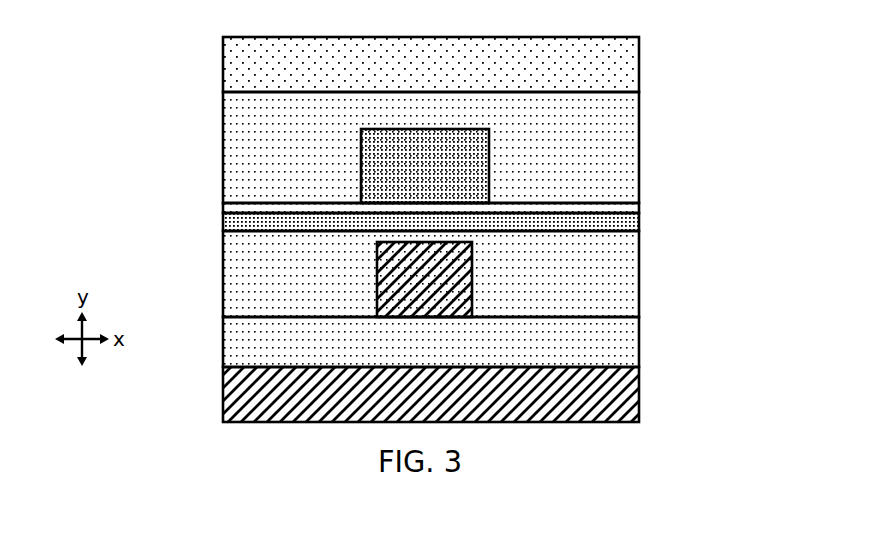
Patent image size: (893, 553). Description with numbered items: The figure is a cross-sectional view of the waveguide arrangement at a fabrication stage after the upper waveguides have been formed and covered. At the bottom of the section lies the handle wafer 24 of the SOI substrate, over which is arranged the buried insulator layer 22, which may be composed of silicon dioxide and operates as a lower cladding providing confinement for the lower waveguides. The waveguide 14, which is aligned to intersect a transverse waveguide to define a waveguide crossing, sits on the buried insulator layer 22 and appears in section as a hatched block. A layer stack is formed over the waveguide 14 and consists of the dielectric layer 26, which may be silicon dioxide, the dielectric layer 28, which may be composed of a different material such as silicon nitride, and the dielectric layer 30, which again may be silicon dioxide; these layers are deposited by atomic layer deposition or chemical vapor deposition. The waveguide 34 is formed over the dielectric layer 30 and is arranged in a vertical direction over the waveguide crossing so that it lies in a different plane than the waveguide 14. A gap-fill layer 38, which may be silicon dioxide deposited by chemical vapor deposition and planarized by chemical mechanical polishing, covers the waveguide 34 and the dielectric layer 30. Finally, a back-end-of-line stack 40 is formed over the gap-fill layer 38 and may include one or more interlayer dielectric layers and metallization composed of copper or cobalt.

The waveguide 14 is at (419, 278).
The buried insulator layer 22 is at (240, 335).
The handle wafer 24 is at (240, 397).
The dielectric layer 26 is at (624, 297).
The dielectric layer 28 is at (240, 221).
The dielectric layer 30 is at (620, 205).
The waveguide 34 is at (443, 181).
The gap-fill layer 38 is at (240, 123).
The back-end-of-line stack 40 is at (624, 68).